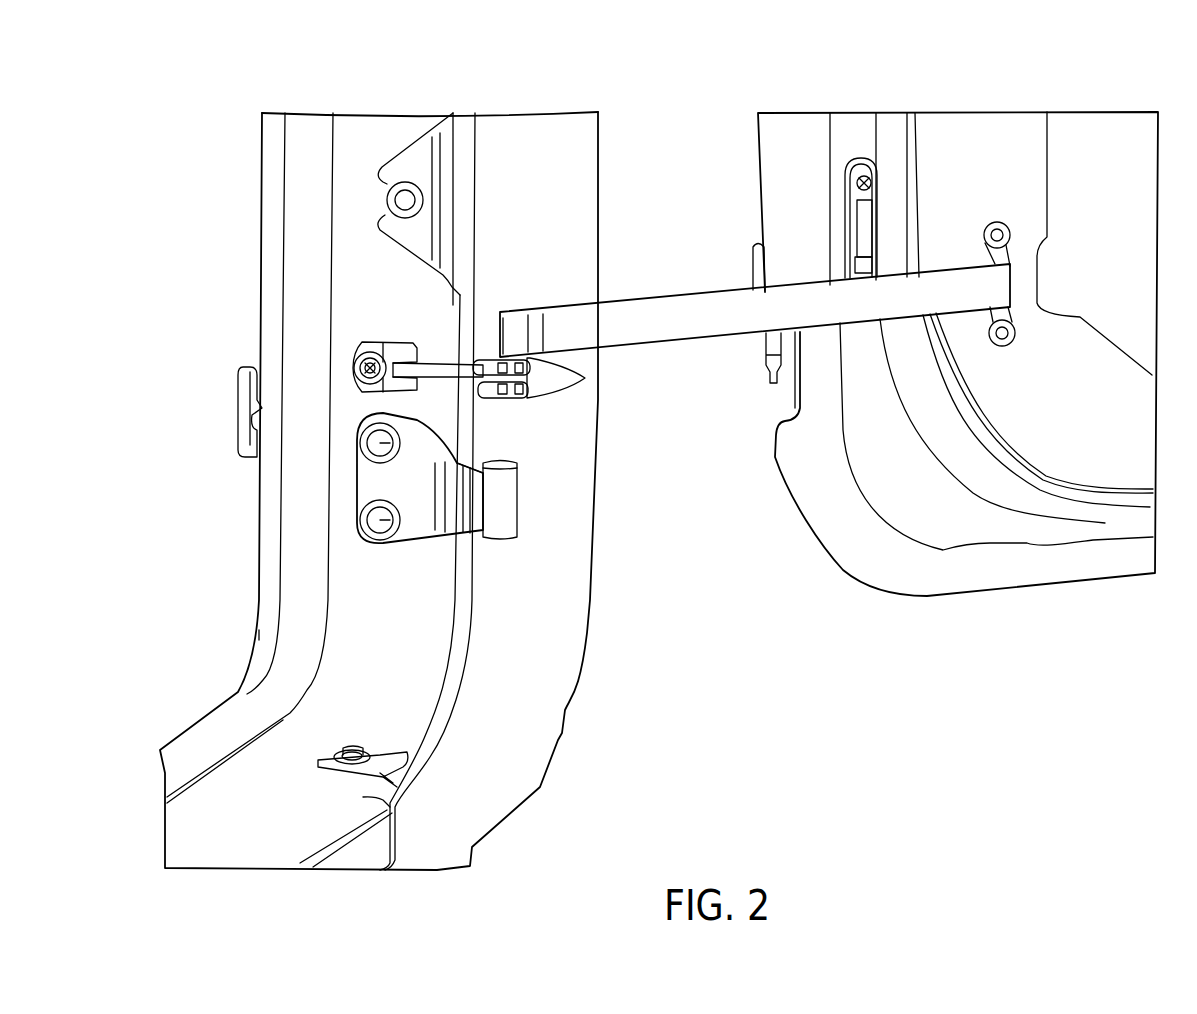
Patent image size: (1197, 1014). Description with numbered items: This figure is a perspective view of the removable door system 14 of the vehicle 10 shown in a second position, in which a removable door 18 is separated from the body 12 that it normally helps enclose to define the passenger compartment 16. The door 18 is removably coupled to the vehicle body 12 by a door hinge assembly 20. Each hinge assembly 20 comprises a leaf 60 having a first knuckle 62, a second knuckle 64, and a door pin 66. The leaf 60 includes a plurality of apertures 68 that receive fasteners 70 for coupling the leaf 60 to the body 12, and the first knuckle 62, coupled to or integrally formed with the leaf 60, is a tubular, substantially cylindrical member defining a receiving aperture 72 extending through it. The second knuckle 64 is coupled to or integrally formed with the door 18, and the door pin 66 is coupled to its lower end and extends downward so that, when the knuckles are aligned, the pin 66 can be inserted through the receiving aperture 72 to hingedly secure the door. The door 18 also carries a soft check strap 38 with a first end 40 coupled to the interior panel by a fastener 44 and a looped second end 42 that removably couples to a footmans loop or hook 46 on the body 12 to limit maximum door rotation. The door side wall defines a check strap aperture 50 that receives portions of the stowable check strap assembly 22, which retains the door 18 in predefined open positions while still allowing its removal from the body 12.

The vehicle 10 is at (412, 99).
The body 12 is at (252, 151).
The removable door system 14 is at (832, 99).
The passenger compartment 16 is at (213, 601).
The removable door 18 is at (963, 135).
The door hinge assembly 20 is at (512, 549).
The stowable check strap assembly 22 is at (353, 387).
The soft check strap 38 is at (660, 315).
The first end 40 is at (538, 304).
The second end 42 is at (945, 262).
The fastener 44 is at (1000, 224).
The footmans loop or hook 46 is at (236, 408).
The check strap aperture 50 is at (862, 163).
The leaf 60 is at (415, 540).
The first knuckle 62 is at (512, 500).
The second knuckle 64 is at (752, 272).
The door pin 66 is at (770, 350).
The apertures 68 is at (357, 527).
The fasteners 70 is at (383, 500).
The receiving aperture 72 is at (500, 459).